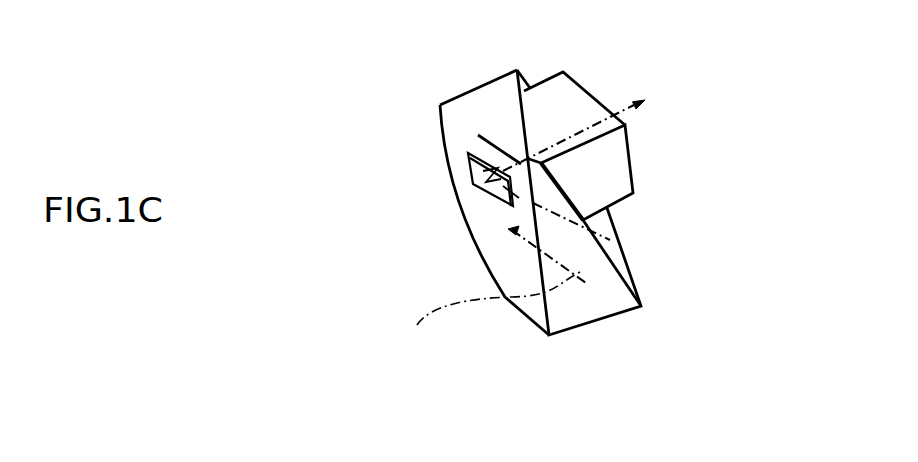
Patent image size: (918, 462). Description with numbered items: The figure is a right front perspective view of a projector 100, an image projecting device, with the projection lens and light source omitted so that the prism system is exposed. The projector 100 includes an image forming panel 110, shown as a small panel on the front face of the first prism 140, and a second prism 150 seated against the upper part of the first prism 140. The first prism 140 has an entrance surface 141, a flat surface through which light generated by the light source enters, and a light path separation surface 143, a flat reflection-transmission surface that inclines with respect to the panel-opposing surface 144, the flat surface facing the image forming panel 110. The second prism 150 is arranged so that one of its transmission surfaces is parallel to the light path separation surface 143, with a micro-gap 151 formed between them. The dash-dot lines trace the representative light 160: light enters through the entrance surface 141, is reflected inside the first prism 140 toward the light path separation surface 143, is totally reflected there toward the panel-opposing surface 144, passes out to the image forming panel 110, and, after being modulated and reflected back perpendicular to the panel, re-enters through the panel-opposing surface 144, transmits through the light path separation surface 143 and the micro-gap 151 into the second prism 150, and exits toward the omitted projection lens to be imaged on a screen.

The projector 100 is at (437, 51).
The image forming panel 110 is at (468, 168).
The first prism 140 is at (468, 225).
The entrance surface 141 is at (587, 298).
The light path separation surface 143 is at (607, 225).
The panel-opposing surface 144 is at (506, 238).
The second prism 150 is at (632, 147).
The micro-gap 151 is at (527, 112).
The representative light 160 is at (491, 314).